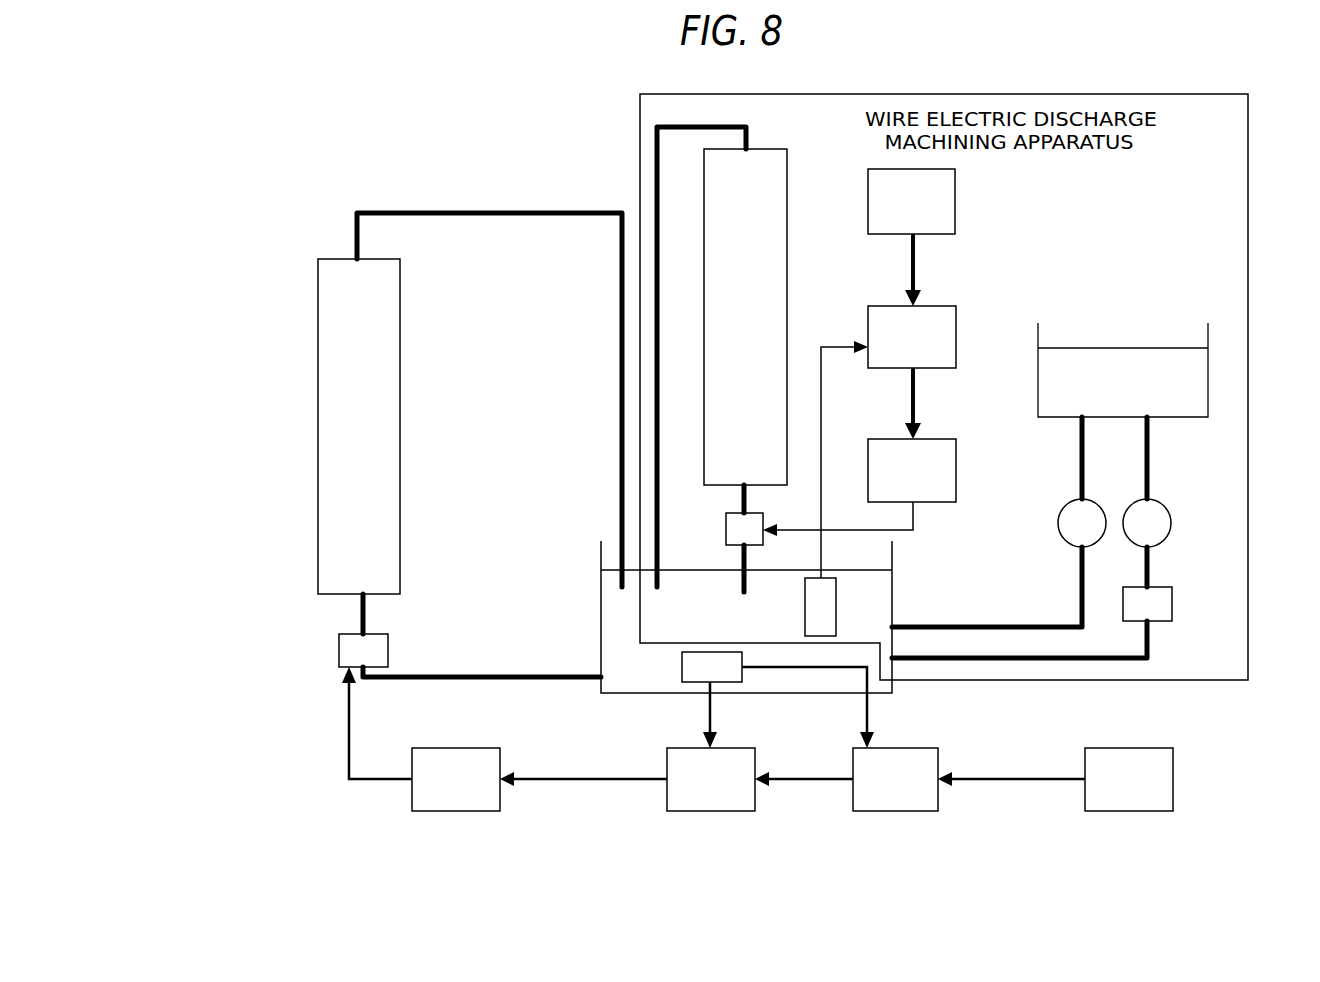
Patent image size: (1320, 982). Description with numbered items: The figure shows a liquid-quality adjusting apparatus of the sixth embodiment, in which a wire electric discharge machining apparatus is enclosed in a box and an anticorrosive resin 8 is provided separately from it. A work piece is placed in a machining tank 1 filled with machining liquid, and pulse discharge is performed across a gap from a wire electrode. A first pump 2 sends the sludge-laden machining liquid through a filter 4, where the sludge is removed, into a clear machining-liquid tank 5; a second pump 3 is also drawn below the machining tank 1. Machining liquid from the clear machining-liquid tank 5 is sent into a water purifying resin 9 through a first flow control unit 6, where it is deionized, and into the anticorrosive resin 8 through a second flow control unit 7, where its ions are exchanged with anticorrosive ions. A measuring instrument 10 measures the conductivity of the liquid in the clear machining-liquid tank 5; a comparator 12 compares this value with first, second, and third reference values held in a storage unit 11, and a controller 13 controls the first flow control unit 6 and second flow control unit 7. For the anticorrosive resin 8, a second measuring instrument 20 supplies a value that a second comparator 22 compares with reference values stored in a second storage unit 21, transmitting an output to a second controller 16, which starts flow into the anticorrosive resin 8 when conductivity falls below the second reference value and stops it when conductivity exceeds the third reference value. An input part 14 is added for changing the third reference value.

The machining tank 1 is at (1180, 280).
The first pump 2 is at (1165, 505).
The pump 3 is at (1072, 522).
The filter 4 is at (1160, 592).
The clear machining-liquid tank 5 is at (623, 630).
The first flow control unit 6 is at (735, 538).
The second flow control unit 7 is at (343, 648).
The anticorrosive resin 8 is at (340, 393).
The water purifying resin 9 is at (719, 205).
The measuring instrument 10 is at (818, 617).
The storage unit 11 is at (943, 225).
The comparator 12 is at (943, 315).
The controller 13 is at (927, 452).
The input part 14 is at (1160, 800).
The second controller 16 is at (493, 800).
The second measuring instrument 20 is at (706, 665).
The second storage unit 21 is at (928, 800).
The second comparator 22 is at (745, 800).